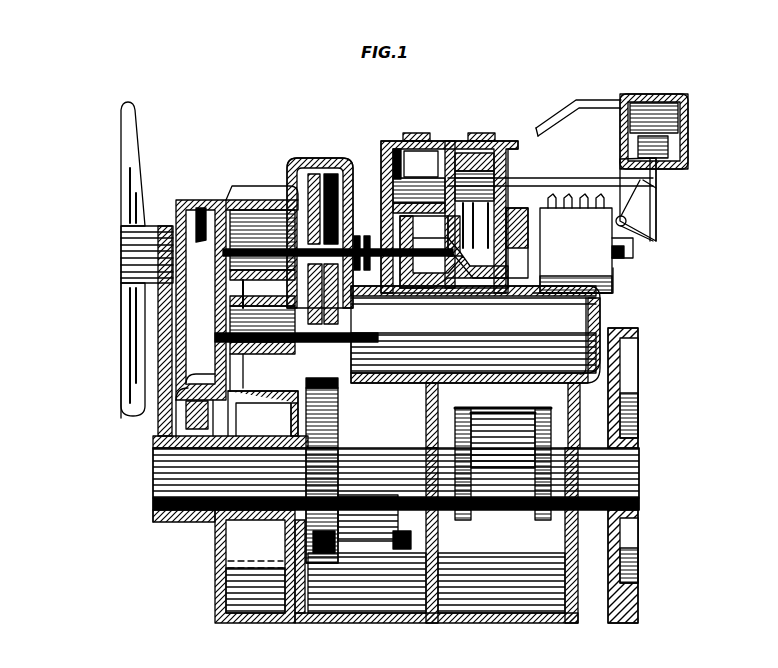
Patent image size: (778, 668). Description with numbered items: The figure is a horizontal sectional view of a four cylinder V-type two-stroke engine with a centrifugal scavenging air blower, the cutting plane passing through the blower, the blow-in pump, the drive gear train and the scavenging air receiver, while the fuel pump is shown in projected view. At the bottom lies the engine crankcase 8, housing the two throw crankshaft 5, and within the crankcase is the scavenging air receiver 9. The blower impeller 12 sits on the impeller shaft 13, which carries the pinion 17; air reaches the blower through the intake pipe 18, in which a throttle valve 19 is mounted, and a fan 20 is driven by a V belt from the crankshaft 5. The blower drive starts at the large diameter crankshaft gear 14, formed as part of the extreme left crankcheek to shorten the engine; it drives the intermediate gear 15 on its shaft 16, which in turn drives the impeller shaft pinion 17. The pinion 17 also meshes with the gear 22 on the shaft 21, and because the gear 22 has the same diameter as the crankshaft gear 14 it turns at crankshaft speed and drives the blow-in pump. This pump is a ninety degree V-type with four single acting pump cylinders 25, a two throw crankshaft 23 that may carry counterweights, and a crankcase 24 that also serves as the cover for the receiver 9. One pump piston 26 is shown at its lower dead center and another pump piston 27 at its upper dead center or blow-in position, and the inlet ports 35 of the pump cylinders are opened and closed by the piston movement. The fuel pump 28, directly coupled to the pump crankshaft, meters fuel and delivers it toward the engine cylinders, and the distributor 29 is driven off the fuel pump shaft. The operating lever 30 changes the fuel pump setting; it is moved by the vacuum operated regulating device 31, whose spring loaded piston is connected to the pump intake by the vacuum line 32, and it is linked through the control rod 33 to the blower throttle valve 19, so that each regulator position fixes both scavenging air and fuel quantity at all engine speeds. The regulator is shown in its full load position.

The two throw crankshaft 5 is at (350, 492).
The crankcase 8 is at (370, 615).
The scavenging air receiver 9 is at (500, 366).
The impeller 12 is at (212, 298).
The impeller shaft 13 is at (366, 328).
The crankshaft gear 14 is at (322, 452).
The intermediate gear 15 is at (322, 390).
The shaft 16 is at (372, 333).
The pinion 17 is at (285, 342).
The intake pipe 18 is at (178, 349).
The throttle valve 19 is at (196, 196).
The fan 20 is at (118, 152).
The shaft 21 is at (345, 228).
The gear 22 is at (315, 150).
The two throw crankshaft 23 is at (455, 250).
The crankcase 24 is at (497, 290).
The pump cylinders 25 is at (442, 133).
The pump piston 26 is at (380, 176).
The pump piston 27 is at (493, 133).
The fuel pump 28 is at (604, 278).
The distributor 29 is at (622, 255).
The operating lever 30 is at (648, 233).
The vacuum operated regulating device 31 is at (680, 120).
The vacuum line 32 is at (550, 104).
The control rod 33 is at (550, 170).
The inlet ports 35 is at (421, 164).